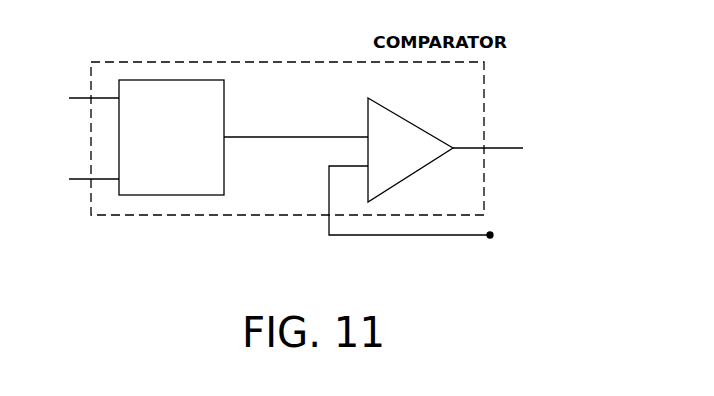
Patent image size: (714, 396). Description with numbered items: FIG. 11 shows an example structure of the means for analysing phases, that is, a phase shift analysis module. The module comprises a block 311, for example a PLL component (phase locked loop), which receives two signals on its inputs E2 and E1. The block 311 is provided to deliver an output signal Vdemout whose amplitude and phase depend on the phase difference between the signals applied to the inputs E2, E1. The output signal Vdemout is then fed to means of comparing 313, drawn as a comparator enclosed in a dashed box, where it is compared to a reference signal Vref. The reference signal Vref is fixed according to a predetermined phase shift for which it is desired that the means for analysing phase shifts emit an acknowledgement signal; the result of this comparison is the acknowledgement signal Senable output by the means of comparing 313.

The block 311 is at (165, 185).
The means of comparing 313 is at (400, 152).
The input E1 is at (78, 97).
The input E2 is at (79, 180).
The output signal Vdemout is at (296, 123).
The reference signal Vref is at (435, 204).
The acknowledgement signal Senable is at (510, 134).